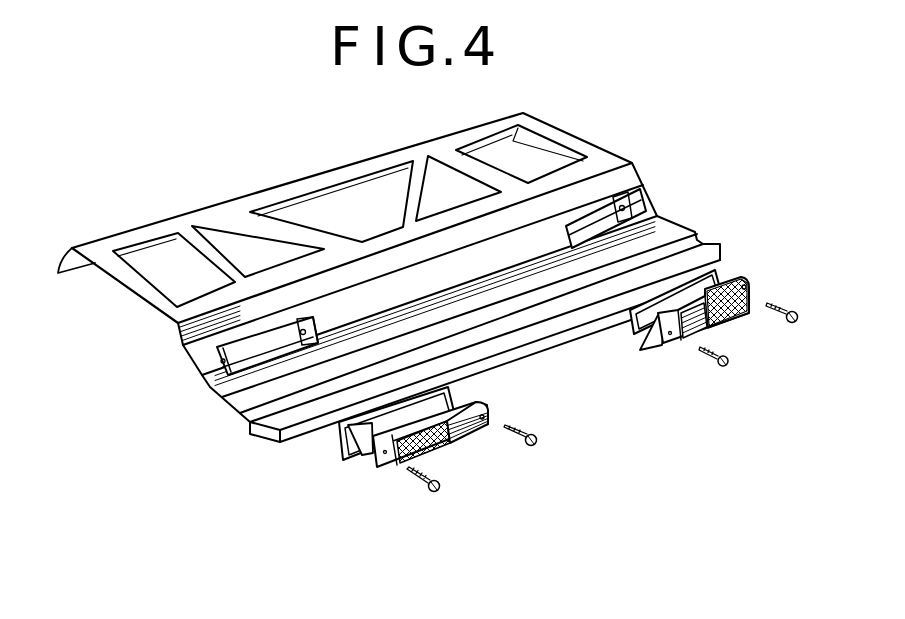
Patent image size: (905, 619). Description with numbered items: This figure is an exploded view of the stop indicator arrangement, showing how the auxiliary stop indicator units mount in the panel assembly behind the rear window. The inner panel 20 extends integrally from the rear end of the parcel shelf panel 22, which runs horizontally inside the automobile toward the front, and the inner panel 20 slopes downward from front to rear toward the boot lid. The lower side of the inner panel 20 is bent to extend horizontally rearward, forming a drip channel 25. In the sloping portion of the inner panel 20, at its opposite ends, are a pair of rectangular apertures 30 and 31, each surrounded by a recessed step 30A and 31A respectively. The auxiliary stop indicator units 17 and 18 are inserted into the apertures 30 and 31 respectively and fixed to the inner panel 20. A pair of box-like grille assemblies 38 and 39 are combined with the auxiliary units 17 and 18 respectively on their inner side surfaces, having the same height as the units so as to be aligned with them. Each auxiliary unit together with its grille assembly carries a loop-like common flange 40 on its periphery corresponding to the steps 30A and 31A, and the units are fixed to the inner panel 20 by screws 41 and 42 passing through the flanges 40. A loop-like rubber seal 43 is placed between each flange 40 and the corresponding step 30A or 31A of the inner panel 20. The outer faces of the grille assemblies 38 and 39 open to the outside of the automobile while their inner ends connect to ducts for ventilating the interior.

The auxiliary stop indicator unit 17 is at (397, 462).
The auxiliary stop indicator unit 18 is at (732, 322).
The inner panel 20 is at (527, 259).
The parcel shelf panel 22 is at (238, 212).
The drip channel 25 is at (271, 438).
The rectangular aperture 30 is at (241, 351).
The recessed step 30A is at (305, 322).
The rectangular aperture 31 is at (597, 215).
The recessed step 31A is at (632, 202).
The grille assembly 38 is at (468, 432).
The grille assembly 39 is at (697, 342).
The common flange 40 is at (366, 460).
The screw 41 is at (439, 491).
The screw 42 is at (536, 441).
The rubber seal 43 is at (342, 436).